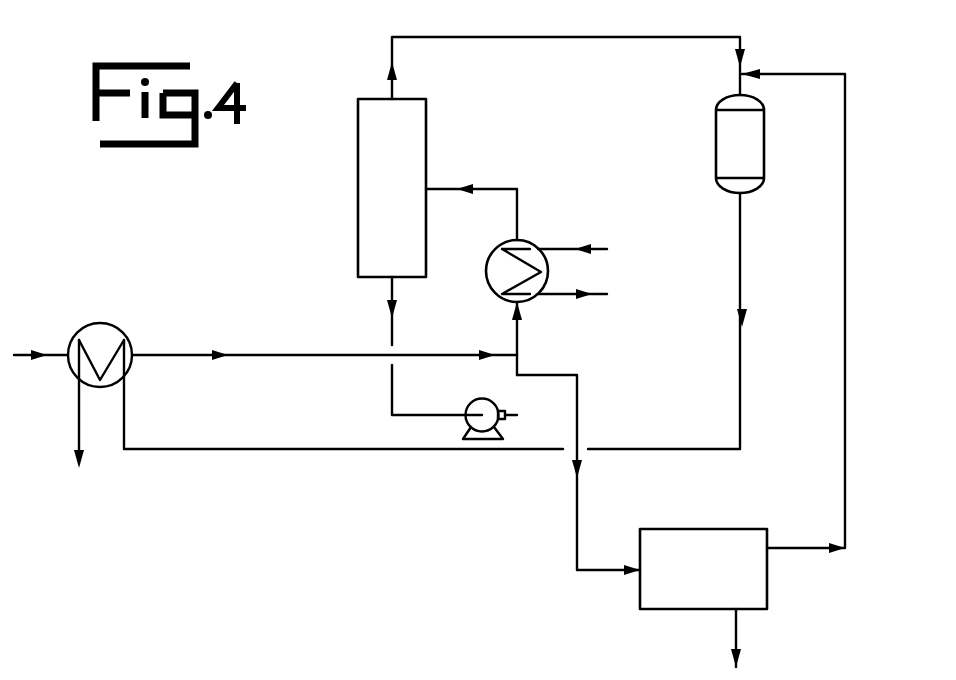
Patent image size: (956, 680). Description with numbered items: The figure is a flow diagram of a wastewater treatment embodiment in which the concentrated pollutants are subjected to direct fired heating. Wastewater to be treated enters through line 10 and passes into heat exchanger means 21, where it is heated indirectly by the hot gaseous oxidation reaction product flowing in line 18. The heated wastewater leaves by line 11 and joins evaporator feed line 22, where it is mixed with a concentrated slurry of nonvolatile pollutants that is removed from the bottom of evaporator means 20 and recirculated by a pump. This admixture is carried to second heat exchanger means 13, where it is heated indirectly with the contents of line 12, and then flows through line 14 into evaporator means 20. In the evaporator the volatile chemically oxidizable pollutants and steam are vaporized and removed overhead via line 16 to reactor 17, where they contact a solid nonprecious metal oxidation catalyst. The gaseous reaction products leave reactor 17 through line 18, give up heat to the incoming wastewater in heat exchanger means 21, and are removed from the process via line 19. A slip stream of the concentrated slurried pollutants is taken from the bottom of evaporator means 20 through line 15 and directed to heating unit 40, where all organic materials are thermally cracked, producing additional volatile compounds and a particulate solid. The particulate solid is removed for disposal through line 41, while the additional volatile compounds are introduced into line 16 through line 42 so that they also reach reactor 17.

The line 10 is at (22, 353).
The line 11 is at (170, 353).
The line 12 is at (602, 243).
The second heat exchanger means 13 is at (535, 303).
The line 14 is at (518, 208).
The line 15 is at (578, 396).
The line 16 is at (577, 36).
The reactor 17 is at (764, 148).
The line 18 is at (742, 248).
The line 19 is at (78, 424).
The evaporator means 20 is at (427, 128).
The heat exchanger means 21 is at (112, 326).
The evaporator feed line 22 is at (517, 337).
The heating unit 40 is at (658, 612).
The line 41 is at (745, 656).
The line 42 is at (808, 557).